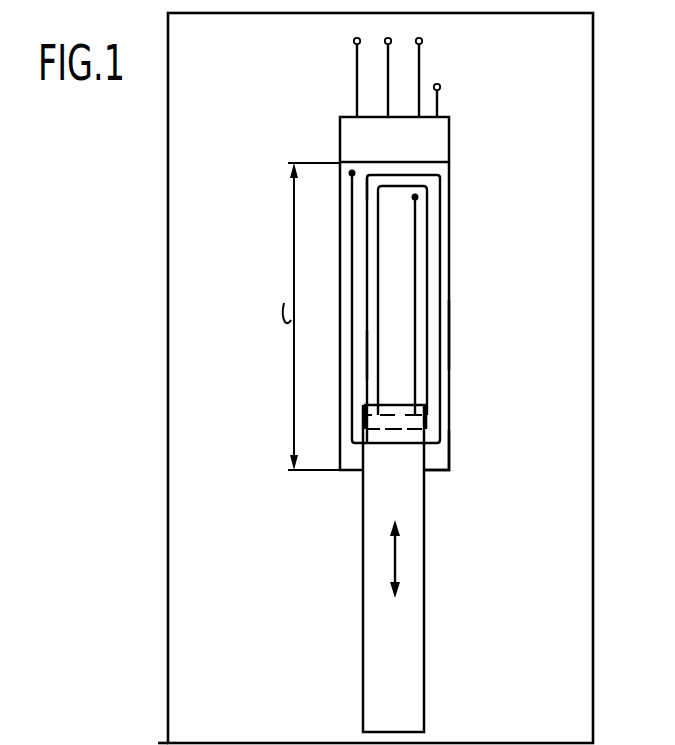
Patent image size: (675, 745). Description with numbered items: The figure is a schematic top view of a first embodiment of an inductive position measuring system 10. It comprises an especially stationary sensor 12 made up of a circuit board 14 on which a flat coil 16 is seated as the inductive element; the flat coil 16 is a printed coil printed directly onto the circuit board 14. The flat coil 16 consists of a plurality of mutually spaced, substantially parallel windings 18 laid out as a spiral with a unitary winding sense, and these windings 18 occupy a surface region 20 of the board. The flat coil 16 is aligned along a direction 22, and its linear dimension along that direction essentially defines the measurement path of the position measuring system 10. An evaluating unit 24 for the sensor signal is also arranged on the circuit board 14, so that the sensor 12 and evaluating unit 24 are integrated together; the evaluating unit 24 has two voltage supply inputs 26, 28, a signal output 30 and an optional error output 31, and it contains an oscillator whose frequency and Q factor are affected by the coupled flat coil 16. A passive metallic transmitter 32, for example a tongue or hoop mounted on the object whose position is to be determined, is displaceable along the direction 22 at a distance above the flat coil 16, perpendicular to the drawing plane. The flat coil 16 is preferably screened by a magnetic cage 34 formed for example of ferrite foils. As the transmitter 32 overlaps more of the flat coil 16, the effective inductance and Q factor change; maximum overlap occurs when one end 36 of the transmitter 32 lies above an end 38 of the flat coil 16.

The position measuring system 10 is at (607, 690).
The sensor 12 is at (470, 334).
The circuit board 14 is at (445, 433).
The flat coil 16 is at (438, 282).
The windings 18 is at (438, 187).
The surface region 20 is at (367, 352).
The direction 22 is at (397, 559).
The evaluating unit 24 is at (427, 135).
The voltage supply input 26 is at (355, 56).
The voltage supply input 28 is at (420, 72).
The signal output 30 is at (388, 58).
The error output 31 is at (438, 98).
The transmitter 32 is at (413, 539).
The magnetic cage 34 is at (158, 743).
The end of the transmitter 36 is at (394, 406).
The end of the flat coil 38 is at (372, 176).